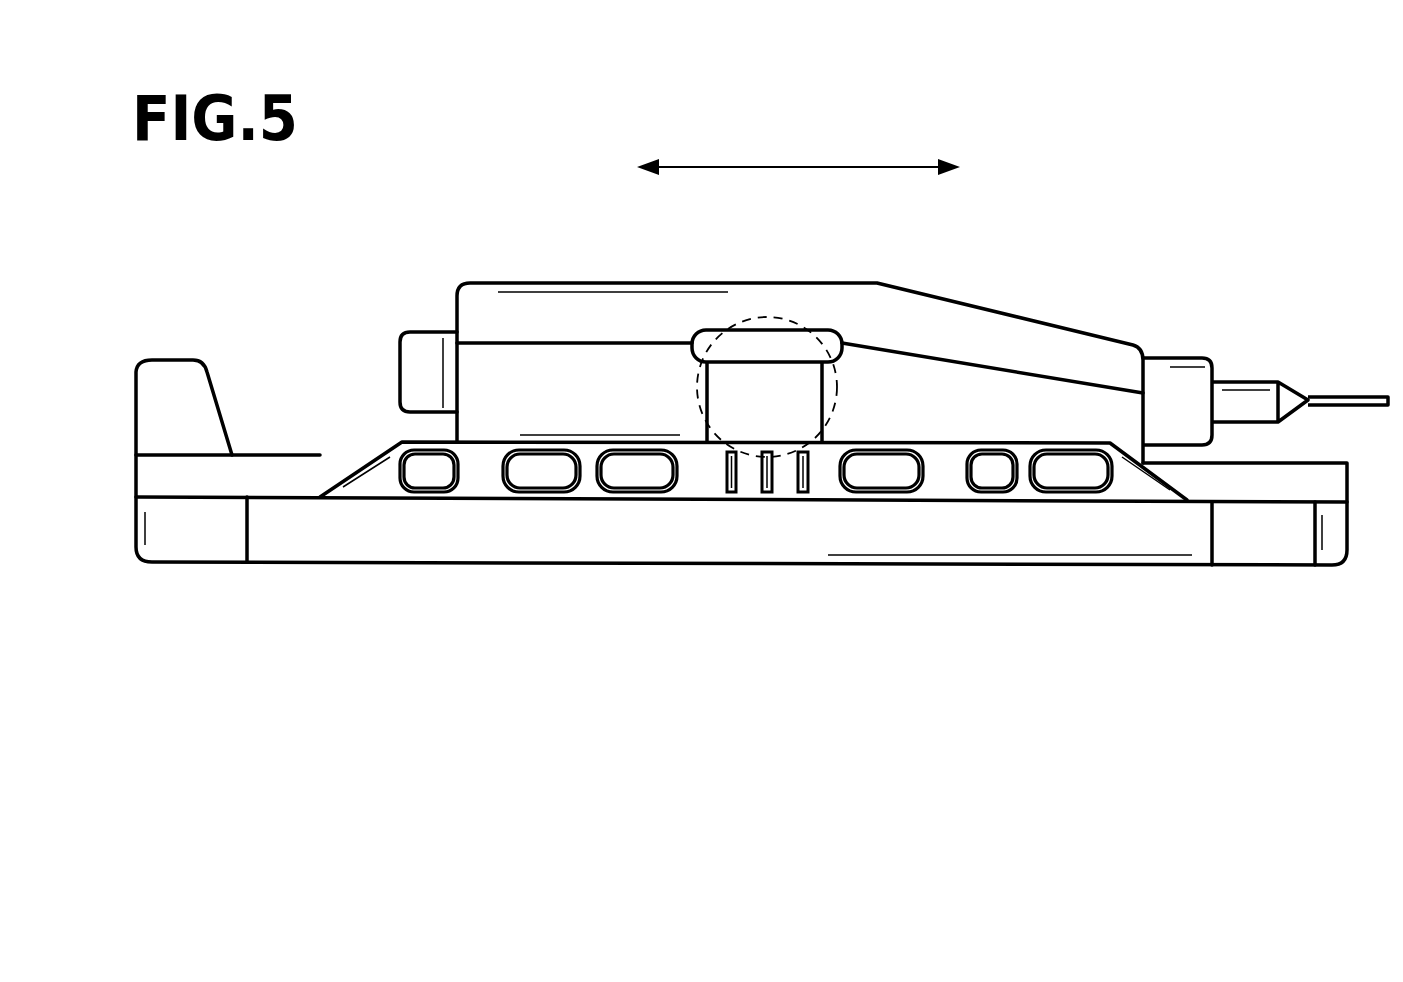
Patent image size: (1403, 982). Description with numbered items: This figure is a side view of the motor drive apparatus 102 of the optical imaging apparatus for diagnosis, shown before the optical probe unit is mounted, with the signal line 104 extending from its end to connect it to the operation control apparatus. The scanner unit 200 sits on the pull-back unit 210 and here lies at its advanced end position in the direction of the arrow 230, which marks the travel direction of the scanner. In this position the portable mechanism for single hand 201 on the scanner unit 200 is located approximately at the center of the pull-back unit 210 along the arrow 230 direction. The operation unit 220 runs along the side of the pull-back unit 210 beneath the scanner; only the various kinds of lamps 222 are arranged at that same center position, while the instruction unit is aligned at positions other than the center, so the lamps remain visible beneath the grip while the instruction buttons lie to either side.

The motor drive apparatus 102 is at (1225, 695).
The signal line 104 is at (1347, 397).
The scanner unit 200 is at (1050, 324).
The portable mechanism for single hand 201 is at (763, 320).
The pull-back unit 210 is at (310, 563).
The operation unit 220 is at (758, 630).
The lamps 222 is at (822, 505).
The arrow 230 is at (808, 166).